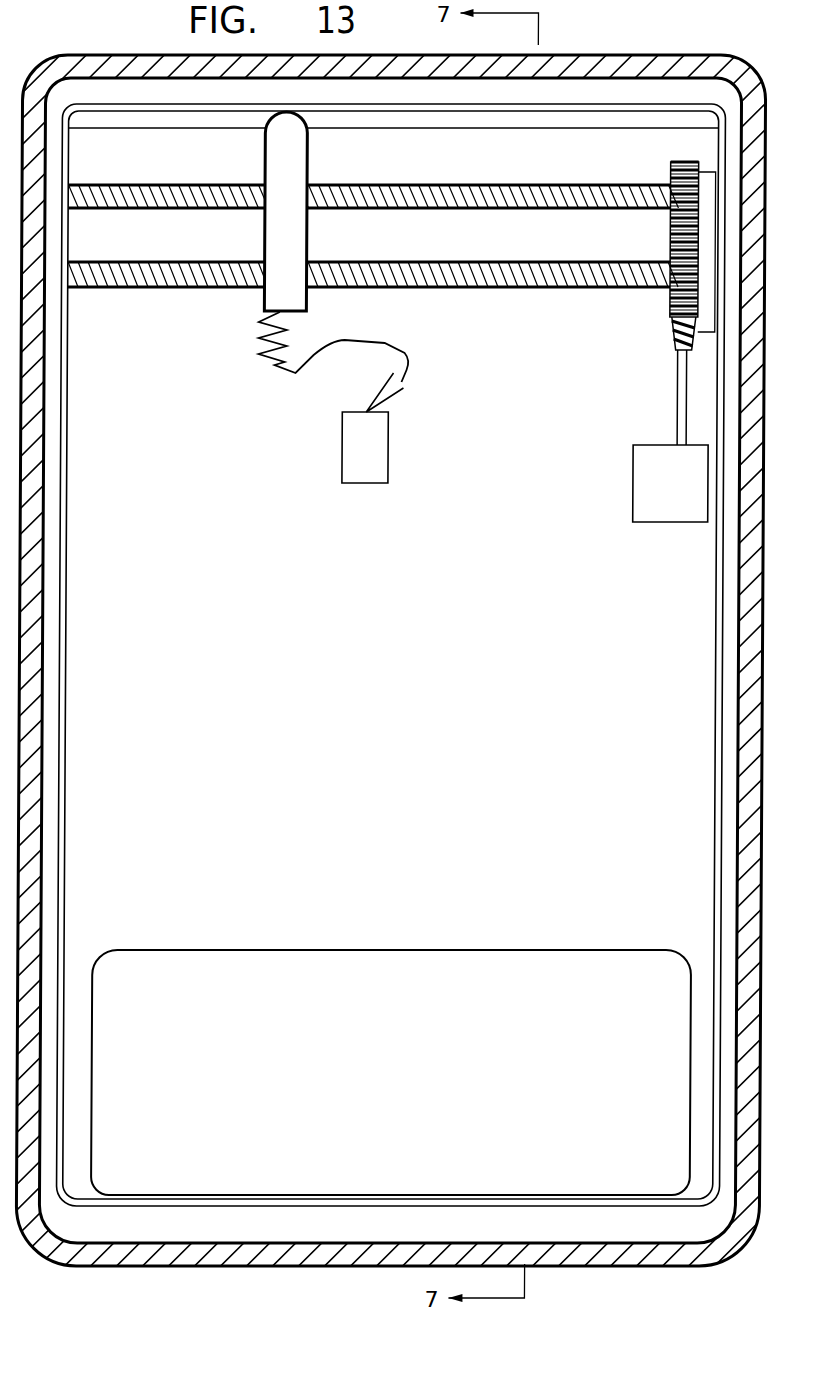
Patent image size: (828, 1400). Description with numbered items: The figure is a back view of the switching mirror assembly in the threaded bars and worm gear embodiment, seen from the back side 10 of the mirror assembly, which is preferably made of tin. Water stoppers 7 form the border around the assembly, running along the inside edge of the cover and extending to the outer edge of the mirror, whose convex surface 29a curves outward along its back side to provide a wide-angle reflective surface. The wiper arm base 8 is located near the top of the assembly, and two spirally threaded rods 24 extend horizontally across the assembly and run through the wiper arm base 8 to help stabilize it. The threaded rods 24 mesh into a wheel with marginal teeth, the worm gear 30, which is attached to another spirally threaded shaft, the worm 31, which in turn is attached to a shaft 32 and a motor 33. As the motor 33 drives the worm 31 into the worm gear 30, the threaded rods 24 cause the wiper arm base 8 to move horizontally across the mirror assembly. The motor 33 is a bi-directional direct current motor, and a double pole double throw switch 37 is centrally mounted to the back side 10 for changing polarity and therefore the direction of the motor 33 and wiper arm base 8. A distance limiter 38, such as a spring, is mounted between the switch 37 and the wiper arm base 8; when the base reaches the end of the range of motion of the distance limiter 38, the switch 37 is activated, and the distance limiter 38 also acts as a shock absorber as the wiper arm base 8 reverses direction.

The water stoppers 7 is at (370, 101).
The wiper arm base 8 is at (292, 185).
The back side of the mirror assembly 10 is at (592, 863).
The spirally threaded rods 24 is at (455, 208).
The convex surface 29a is at (455, 1105).
The worm gear 30 is at (668, 166).
The worm 31 is at (670, 329).
The shaft 32 is at (677, 388).
The motor 33 is at (687, 500).
The DPDT switch 37 is at (387, 460).
The distance limiter 38 is at (258, 352).